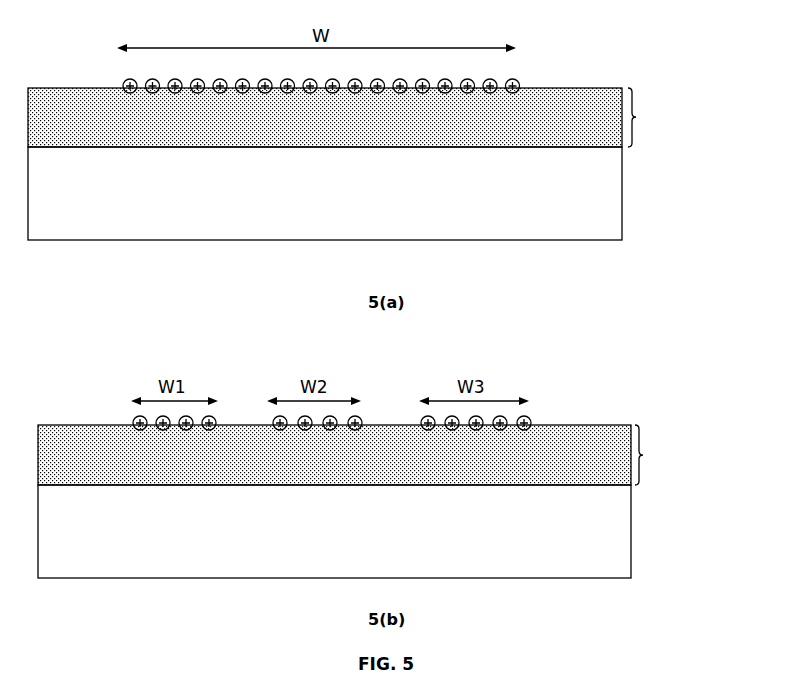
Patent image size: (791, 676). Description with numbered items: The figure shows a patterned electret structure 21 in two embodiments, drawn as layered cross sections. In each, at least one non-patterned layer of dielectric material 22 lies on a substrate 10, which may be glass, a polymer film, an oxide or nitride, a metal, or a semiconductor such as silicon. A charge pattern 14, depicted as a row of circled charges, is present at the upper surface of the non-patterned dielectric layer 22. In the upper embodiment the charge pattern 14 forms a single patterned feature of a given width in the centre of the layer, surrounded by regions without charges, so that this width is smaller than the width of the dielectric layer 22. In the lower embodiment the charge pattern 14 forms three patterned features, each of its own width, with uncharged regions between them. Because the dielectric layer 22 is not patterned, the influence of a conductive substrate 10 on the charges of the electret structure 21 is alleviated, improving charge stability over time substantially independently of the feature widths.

The substrate 10 is at (329, 362).
The charge pattern 14 is at (114, 82).
The electret structure 21 is at (658, 286).
The non-patterned dielectric layer 22 is at (329, 286).